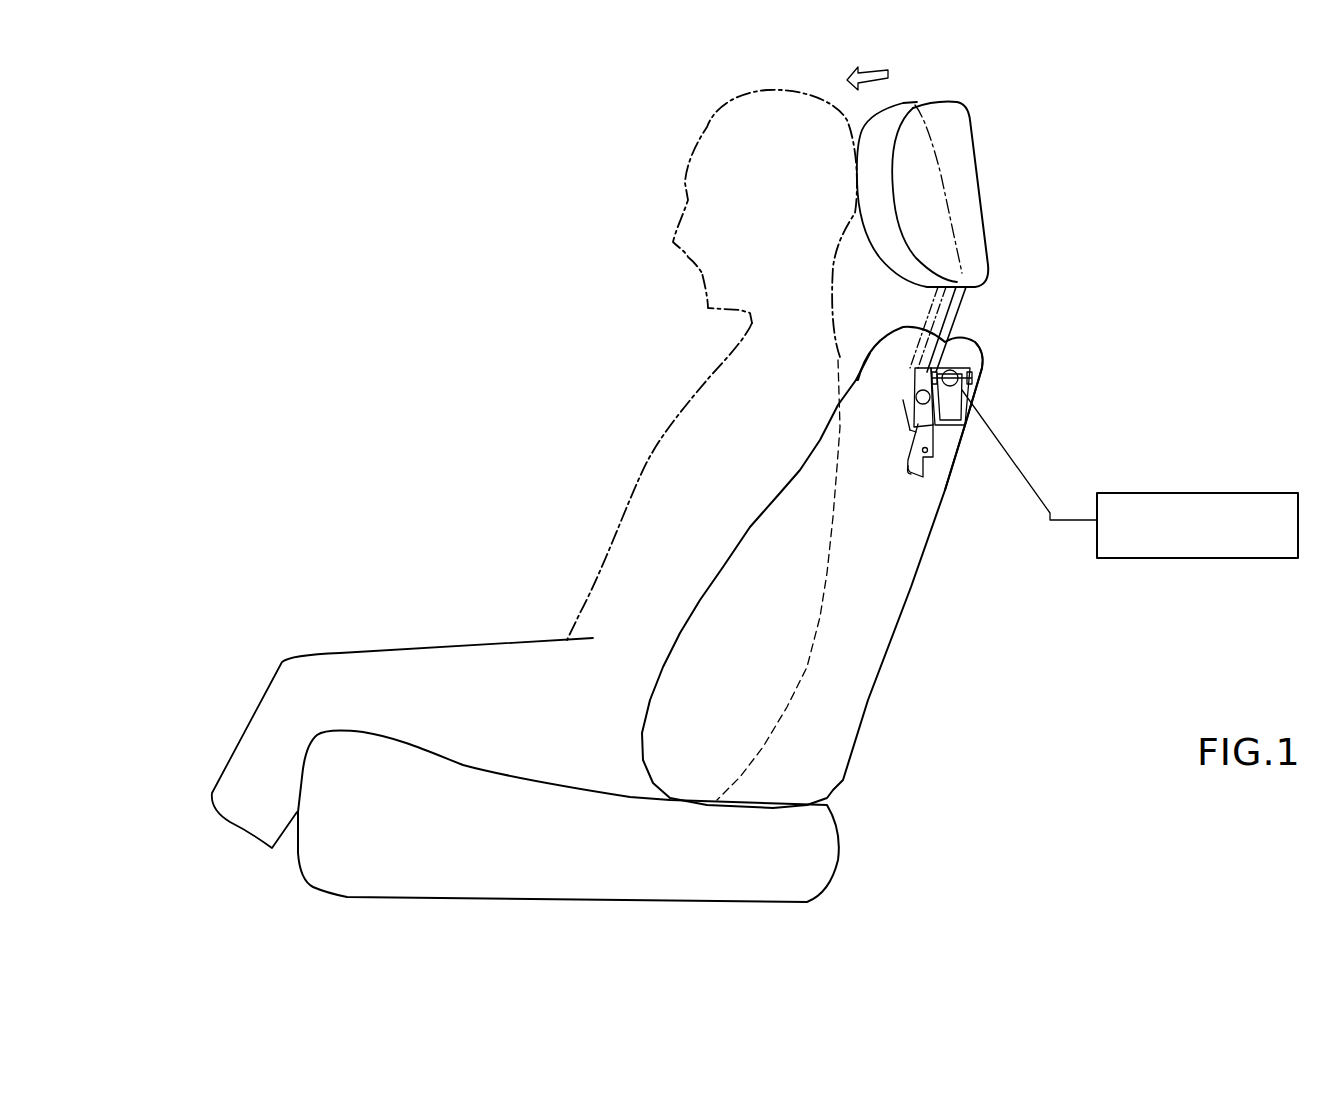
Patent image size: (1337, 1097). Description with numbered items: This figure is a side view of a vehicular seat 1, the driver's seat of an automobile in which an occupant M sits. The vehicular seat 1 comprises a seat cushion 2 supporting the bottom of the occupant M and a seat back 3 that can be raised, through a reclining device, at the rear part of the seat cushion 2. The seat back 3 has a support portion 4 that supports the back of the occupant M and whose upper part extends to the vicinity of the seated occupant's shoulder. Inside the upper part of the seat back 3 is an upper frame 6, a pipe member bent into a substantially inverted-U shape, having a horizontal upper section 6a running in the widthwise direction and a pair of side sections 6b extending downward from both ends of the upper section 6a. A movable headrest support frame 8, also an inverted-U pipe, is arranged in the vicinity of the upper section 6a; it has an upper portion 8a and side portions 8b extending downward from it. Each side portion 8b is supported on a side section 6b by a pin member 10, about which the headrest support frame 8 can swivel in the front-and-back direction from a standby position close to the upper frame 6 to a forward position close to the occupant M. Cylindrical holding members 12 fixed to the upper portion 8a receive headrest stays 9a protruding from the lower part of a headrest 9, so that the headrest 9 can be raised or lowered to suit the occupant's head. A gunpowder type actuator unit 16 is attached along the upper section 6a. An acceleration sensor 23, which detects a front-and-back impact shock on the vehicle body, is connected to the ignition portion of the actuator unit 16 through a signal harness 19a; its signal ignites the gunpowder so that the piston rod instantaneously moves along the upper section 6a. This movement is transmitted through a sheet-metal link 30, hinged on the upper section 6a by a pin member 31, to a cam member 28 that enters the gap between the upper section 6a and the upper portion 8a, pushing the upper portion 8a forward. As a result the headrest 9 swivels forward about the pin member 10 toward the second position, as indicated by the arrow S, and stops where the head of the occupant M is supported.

The vehicular seat 1 is at (640, 614).
The seat cushion 2 is at (818, 872).
The seat back 3 is at (845, 787).
The support portion 4 is at (827, 642).
The upper frame 6 is at (944, 488).
The upper section 6a is at (951, 369).
The side section 6b is at (917, 477).
The headrest support frame 8 is at (849, 393).
The upper portion 8a is at (916, 397).
The side portion 8b is at (913, 410).
The headrest 9 is at (977, 182).
The headrest stay 9a is at (963, 300).
The pin member 10 is at (930, 451).
The holding member 12 is at (915, 367).
The actuator unit 16 is at (982, 362).
The signal harness 19a is at (1048, 517).
The acceleration sensor 23 is at (1190, 493).
The cam member 28 is at (917, 432).
The link 30 is at (963, 408).
The pin member 31 is at (974, 380).
The occupant M is at (650, 453).
The arrow S is at (889, 74).